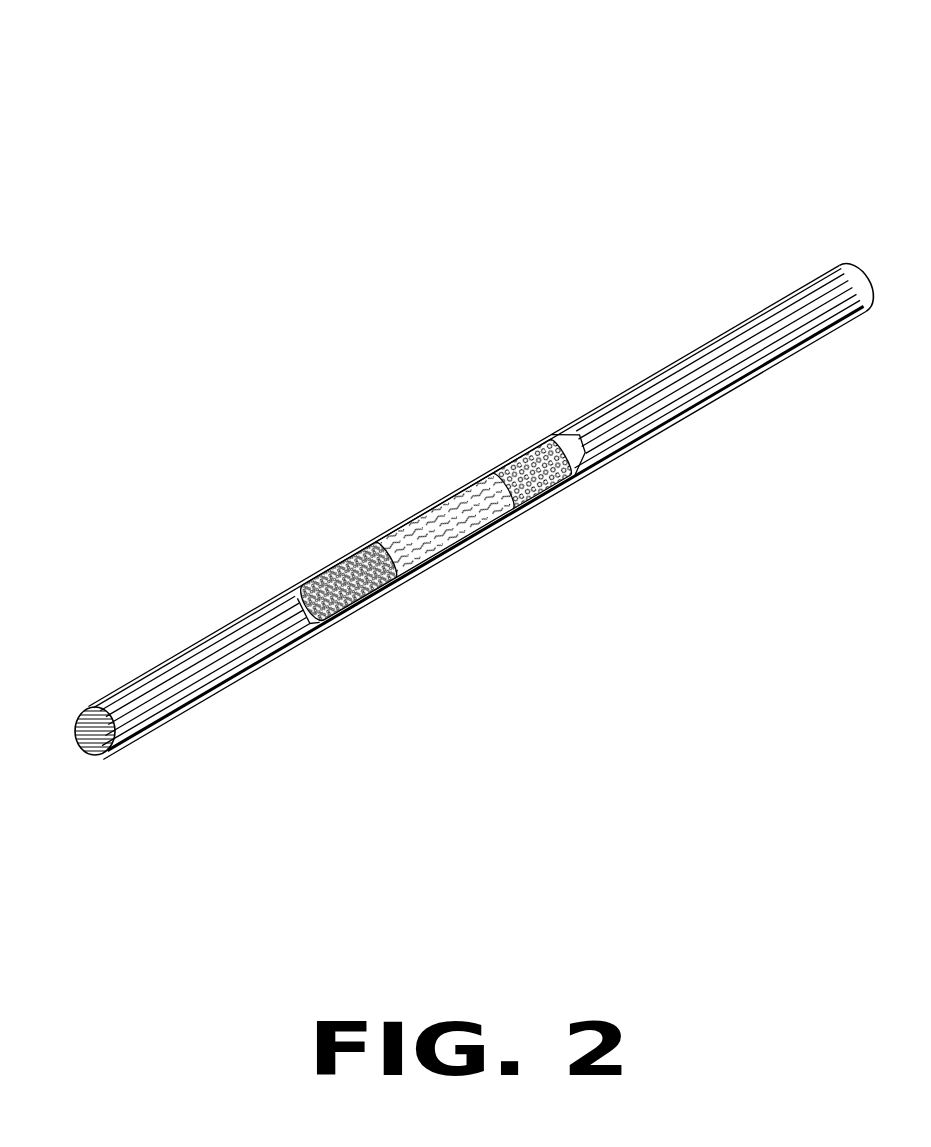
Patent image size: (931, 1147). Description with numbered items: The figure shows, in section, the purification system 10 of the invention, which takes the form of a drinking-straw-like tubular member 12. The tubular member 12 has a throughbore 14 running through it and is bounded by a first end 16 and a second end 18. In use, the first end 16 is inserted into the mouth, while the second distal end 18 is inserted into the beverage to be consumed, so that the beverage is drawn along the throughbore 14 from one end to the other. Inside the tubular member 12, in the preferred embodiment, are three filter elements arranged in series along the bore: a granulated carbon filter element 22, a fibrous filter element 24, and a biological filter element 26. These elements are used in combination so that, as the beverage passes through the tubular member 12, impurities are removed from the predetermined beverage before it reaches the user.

The purification system 10 is at (688, 124).
The tubular member 12 is at (613, 398).
The throughbore 14 is at (93, 752).
The first end 16 is at (835, 268).
The second end 18 is at (173, 657).
The granulated carbon filter element 22 is at (357, 560).
The fibrous filter element 24 is at (447, 535).
The biological filter element 26 is at (545, 480).